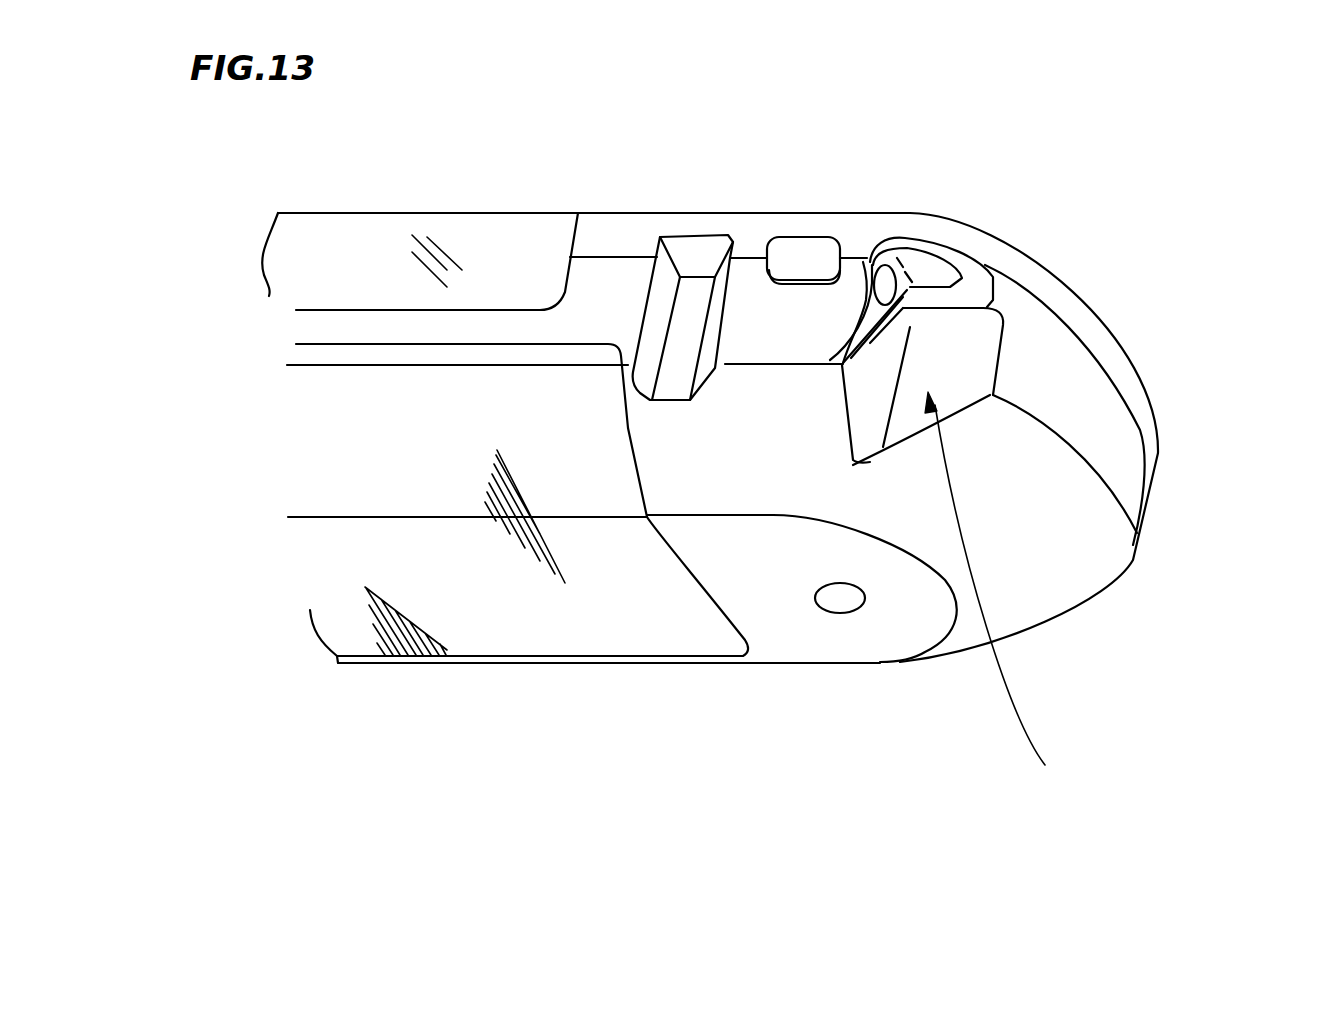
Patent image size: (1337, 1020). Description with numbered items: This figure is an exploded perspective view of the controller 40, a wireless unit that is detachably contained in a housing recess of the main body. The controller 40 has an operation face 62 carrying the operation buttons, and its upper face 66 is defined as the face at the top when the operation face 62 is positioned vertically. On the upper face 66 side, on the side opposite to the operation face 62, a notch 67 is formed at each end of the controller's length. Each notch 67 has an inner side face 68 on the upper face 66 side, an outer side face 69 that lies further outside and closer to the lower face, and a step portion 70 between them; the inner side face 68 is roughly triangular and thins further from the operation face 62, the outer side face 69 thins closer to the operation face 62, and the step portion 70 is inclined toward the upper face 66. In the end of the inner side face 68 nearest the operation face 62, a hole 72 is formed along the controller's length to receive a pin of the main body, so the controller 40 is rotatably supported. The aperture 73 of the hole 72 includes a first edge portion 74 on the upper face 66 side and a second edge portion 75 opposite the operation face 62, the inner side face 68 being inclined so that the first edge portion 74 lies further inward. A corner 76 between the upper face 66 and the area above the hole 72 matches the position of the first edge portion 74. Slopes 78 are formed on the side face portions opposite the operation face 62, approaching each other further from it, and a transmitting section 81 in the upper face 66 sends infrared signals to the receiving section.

The controller 40 is at (1165, 224).
The operation face 62 is at (1040, 277).
The upper face 66 is at (620, 227).
The notch 67 is at (878, 392).
The inner side face 68 is at (862, 265).
The outer side face 69 is at (1001, 598).
The step portion 70 is at (870, 343).
The hole 72 is at (897, 285).
The aperture 73 is at (913, 280).
The first edge portion 74 is at (873, 250).
The second edge portion 75 is at (870, 262).
The corner 76 is at (860, 258).
The slope 78 is at (863, 442).
The transmitting section 81 is at (493, 237).